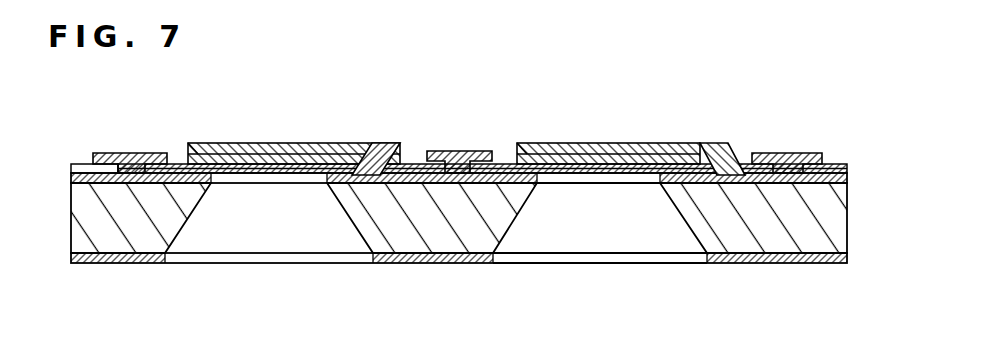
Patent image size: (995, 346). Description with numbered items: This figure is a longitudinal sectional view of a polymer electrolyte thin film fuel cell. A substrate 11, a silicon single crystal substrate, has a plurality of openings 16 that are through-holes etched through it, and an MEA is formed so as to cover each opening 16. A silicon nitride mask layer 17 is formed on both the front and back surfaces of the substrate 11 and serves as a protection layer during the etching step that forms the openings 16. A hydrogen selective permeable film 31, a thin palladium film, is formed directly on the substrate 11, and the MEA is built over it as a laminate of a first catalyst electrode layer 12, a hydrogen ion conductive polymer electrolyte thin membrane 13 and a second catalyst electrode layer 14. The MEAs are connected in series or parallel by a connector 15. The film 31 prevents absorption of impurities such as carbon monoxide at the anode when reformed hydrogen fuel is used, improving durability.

The substrate 11 is at (437, 228).
The first catalyst electrode layer 12 is at (177, 162).
The hydrogen ion conductive polymer electrolyte thin membrane 13 is at (262, 153).
The second catalyst electrode layer 14 is at (387, 152).
The connector 15 is at (457, 157).
The opening 16 is at (560, 233).
The mask layer 17 is at (503, 165).
The hydrogen selective permeable film 31 is at (293, 168).